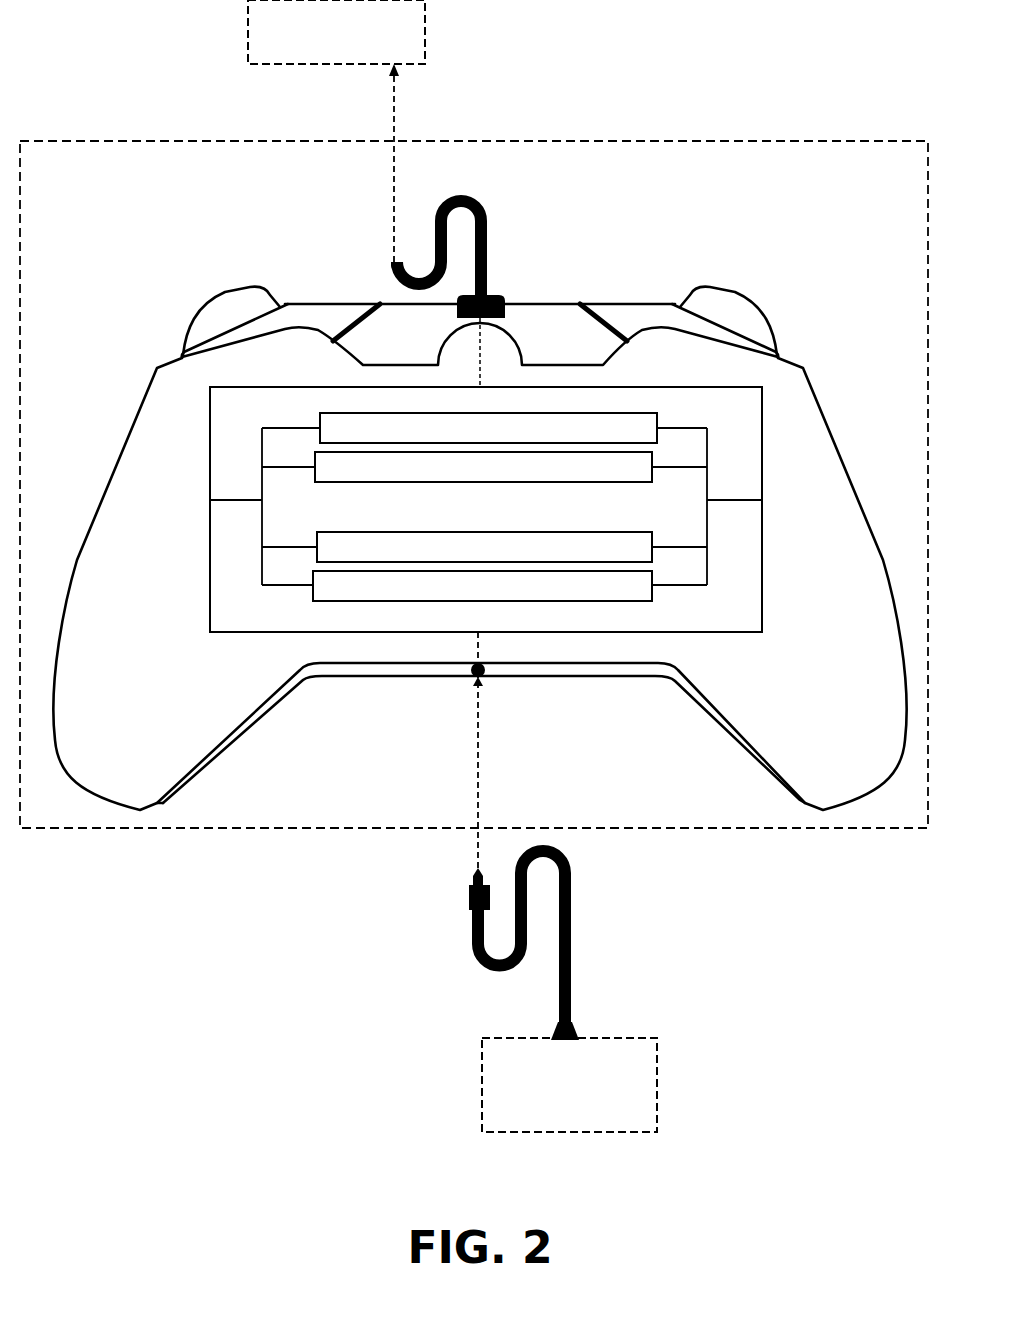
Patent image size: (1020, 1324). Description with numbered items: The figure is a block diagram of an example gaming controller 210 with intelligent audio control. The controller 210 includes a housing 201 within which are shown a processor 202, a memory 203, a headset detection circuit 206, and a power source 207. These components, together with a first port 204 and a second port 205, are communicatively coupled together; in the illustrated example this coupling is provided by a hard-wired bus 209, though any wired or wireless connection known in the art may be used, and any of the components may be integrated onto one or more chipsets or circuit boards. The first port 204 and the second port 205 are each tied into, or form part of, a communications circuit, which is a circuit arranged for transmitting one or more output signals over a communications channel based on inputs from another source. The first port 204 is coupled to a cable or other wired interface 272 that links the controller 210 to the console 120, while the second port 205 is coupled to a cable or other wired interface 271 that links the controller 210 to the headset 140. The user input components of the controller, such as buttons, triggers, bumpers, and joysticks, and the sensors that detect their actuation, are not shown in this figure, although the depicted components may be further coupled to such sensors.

The console 120 is at (336, 32).
The headset 140 is at (569, 1085).
The housing 201 is at (820, 408).
The processor 202 is at (488, 428).
The memory 203 is at (483, 467).
The first port 204 is at (496, 300).
The second port 205 is at (470, 676).
The headset detection circuit 206 is at (484, 547).
The power source 207 is at (482, 586).
The bus 209 is at (521, 534).
The gaming controller 210 is at (474, 484).
The cable or other wired interface 271 is at (486, 795).
The cable or other wired interface 272 is at (492, 230).